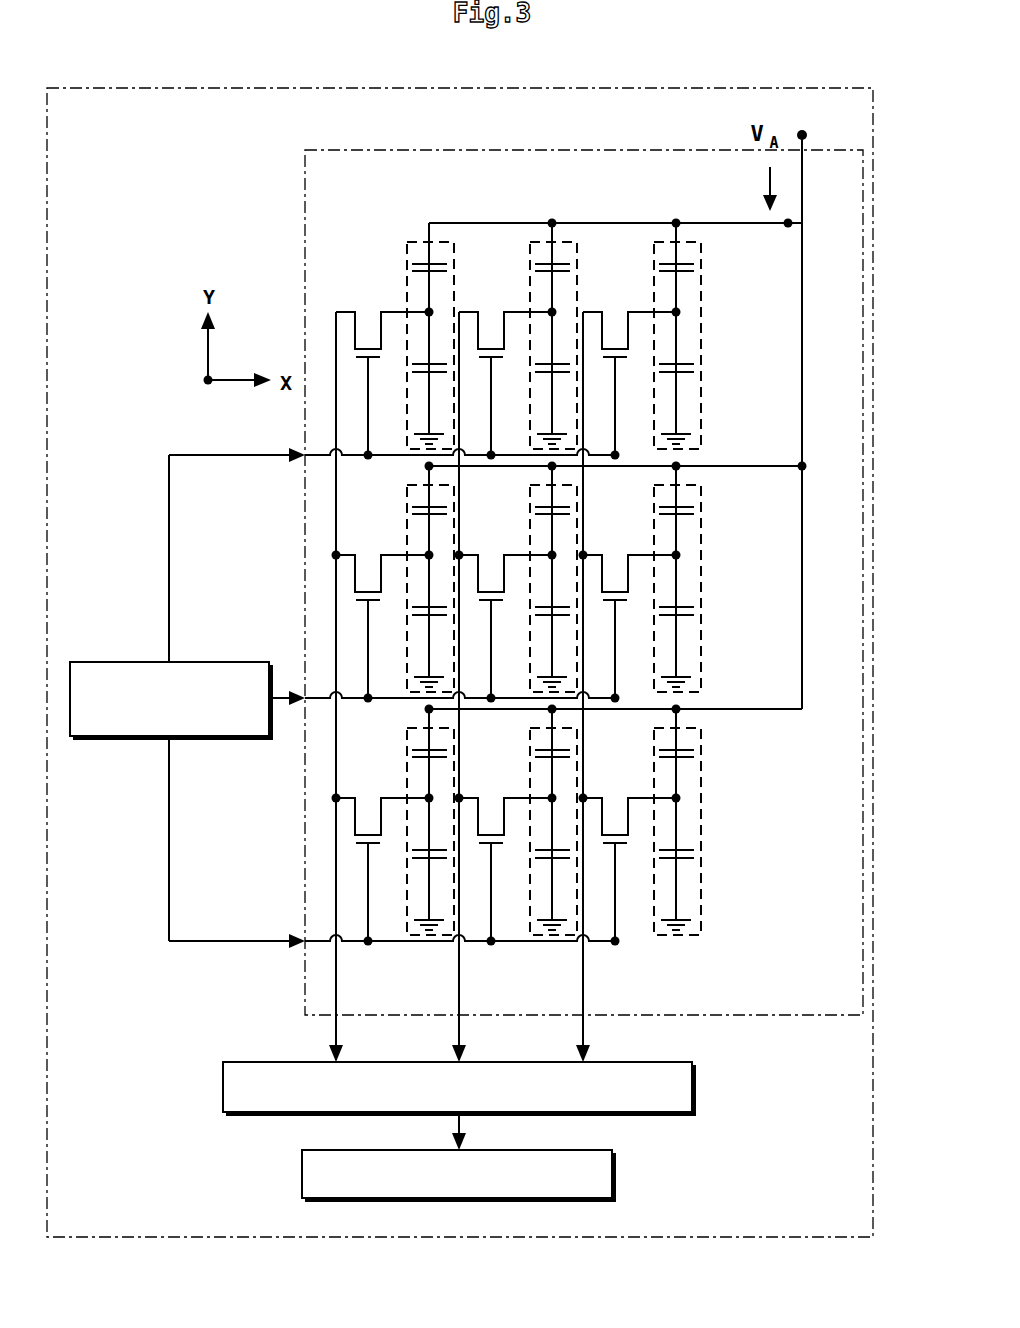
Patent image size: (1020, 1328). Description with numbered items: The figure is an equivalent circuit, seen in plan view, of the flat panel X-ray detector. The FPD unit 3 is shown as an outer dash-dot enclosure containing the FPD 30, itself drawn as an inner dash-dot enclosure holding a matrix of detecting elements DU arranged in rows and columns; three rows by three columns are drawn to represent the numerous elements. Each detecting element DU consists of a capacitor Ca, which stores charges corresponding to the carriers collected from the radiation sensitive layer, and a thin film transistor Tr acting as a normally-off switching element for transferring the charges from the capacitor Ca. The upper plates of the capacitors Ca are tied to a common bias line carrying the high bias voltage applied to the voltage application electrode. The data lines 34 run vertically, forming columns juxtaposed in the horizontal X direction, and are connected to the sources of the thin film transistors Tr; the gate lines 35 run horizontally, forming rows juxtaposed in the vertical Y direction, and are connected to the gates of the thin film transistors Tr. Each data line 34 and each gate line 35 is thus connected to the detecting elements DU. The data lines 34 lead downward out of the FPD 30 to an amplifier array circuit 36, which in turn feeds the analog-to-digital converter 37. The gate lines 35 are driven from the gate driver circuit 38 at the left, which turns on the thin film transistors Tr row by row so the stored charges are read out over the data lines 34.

The FPD unit 3 is at (472, 122).
The FPD 30 is at (603, 183).
The data lines 34 is at (338, 1028).
The gate lines 35 is at (262, 457).
The amplifier array circuit 36 is at (696, 1080).
The analog-to-digital converter 37 is at (616, 1173).
The gate driver circuit 38 is at (183, 660).
The detecting element DU is at (405, 298).
The thin film transistor Tr is at (370, 570).
The capacitor Ca is at (700, 366).